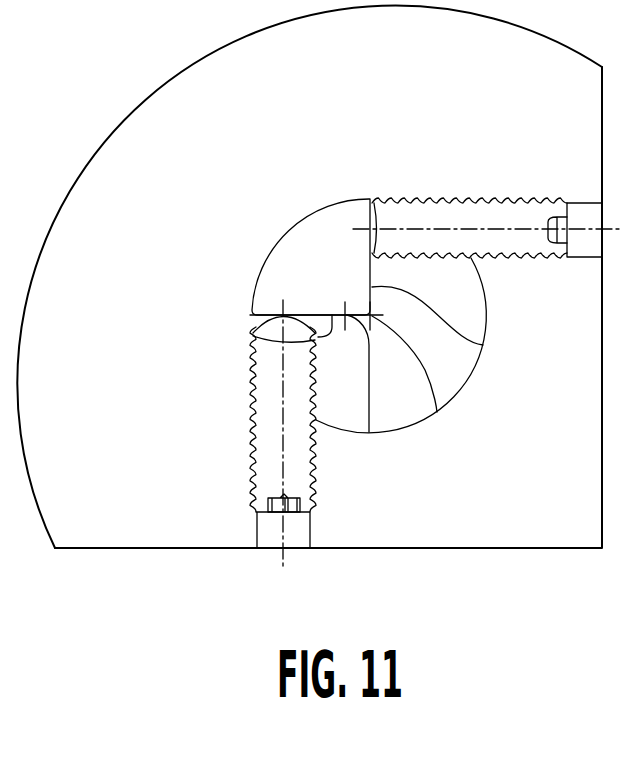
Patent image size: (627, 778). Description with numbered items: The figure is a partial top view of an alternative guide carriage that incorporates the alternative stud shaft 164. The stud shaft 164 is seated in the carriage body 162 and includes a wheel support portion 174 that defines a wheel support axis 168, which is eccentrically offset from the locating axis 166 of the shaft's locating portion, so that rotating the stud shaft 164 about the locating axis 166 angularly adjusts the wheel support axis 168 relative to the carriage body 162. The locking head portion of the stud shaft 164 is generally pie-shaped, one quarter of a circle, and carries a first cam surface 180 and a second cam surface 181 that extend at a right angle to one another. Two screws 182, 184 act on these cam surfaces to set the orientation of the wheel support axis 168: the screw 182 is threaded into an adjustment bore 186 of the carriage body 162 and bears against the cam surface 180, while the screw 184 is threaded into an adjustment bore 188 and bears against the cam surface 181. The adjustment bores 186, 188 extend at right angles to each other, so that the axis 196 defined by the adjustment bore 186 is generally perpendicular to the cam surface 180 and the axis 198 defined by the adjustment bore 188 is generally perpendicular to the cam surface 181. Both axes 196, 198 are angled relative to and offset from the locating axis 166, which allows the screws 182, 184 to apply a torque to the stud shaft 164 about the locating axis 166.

The carriage body 162 is at (348, 72).
The stud shaft 164 is at (447, 368).
The locating axis 166 is at (437, 412).
The wheel support axis 168 is at (369, 432).
The wheel support portion 174 is at (303, 242).
The first cam surface 180 is at (253, 337).
The second cam surface 181 is at (483, 345).
The screw 182 is at (283, 473).
The screw 184 is at (430, 215).
The adjustment bore 186 is at (272, 413).
The adjustment bore 188 is at (490, 246).
The axis 196 is at (283, 378).
The axis 198 is at (528, 228).